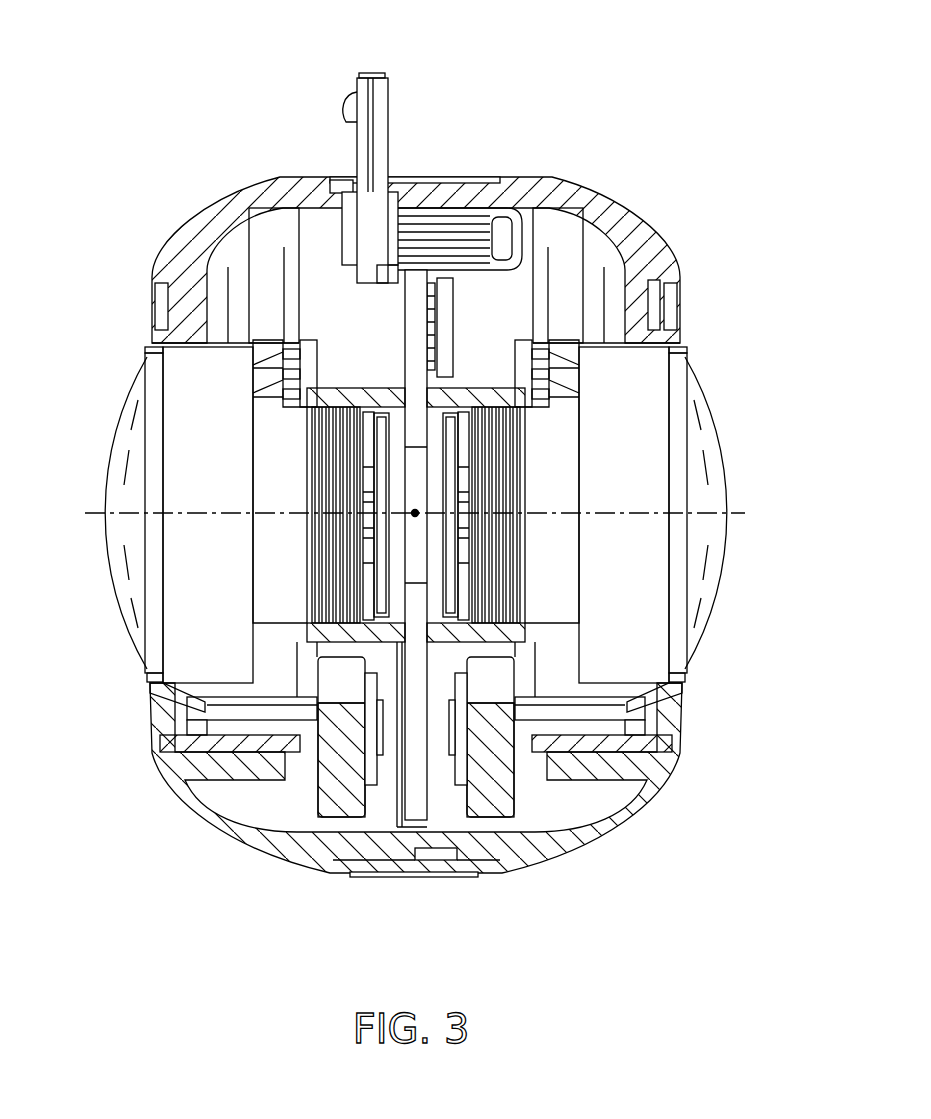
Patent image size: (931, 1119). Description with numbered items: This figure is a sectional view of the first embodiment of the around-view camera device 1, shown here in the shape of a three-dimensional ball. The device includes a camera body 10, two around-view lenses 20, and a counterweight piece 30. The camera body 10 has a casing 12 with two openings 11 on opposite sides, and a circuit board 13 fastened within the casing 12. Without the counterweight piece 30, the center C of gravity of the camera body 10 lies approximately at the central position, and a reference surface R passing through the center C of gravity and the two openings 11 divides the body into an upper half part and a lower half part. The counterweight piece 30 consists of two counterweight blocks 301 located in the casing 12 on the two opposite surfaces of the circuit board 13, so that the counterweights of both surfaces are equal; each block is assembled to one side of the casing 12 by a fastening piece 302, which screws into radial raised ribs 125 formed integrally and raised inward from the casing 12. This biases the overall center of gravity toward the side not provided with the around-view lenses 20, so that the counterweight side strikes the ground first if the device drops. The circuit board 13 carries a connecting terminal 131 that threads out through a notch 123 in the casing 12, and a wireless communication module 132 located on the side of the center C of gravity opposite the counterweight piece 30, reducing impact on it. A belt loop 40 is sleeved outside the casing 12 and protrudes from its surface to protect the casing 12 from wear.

The around-view camera device 1 is at (72, 82).
The camera body 10 is at (440, 528).
The openings 11 is at (150, 370).
The casing 12 is at (453, 528).
The circuit board 13 is at (640, 314).
The notch 123 is at (335, 197).
The radial raised ribs 125 is at (238, 708).
The connecting terminal 131 is at (365, 85).
The wireless communication module 132 is at (408, 337).
The around-view lenses 20 is at (178, 499).
The counterweight piece 30 is at (414, 819).
The counterweight blocks 301 is at (348, 797).
The fastening piece 302 is at (378, 725).
The belt loop 40 is at (425, 181).
The center of gravity C is at (415, 513).
The reference surface R is at (735, 520).